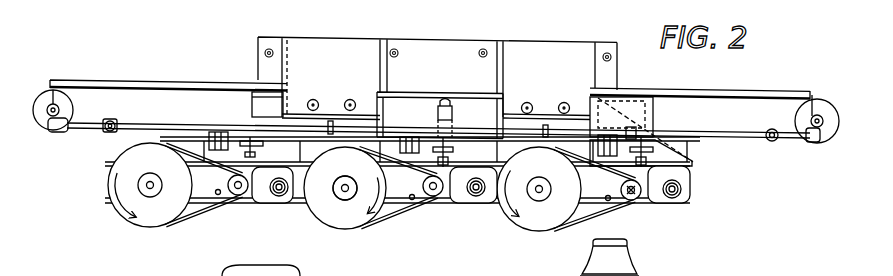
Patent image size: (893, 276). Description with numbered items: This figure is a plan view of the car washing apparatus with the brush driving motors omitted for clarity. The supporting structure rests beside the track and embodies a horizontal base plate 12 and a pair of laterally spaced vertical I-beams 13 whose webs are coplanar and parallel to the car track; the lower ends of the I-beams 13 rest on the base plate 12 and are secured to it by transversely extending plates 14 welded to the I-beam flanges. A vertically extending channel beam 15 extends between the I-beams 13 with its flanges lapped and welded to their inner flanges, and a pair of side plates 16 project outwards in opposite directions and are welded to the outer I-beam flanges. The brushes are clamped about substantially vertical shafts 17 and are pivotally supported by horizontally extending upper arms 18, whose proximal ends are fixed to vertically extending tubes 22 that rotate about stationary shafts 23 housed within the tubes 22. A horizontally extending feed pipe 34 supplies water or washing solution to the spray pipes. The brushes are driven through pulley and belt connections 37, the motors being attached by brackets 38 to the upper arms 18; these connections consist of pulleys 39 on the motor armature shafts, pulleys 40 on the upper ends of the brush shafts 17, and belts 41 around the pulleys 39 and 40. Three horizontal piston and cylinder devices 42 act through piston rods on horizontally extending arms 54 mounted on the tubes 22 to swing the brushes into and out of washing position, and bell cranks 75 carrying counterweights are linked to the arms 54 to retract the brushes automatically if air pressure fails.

The base plate 12 is at (552, 48).
The I-beams 13 is at (328, 110).
The transversely extending plates 14 is at (497, 72).
The channel beam 15 is at (454, 86).
The side plates 16 is at (735, 103).
The shafts 17 is at (338, 194).
The upper arms 18 is at (452, 204).
The tubes 22 is at (263, 202).
The shafts 23 is at (285, 205).
The feed pipe 34 is at (727, 140).
The pulley and belt connections 37 is at (150, 232).
The brackets 38 is at (437, 207).
The pulleys 39 is at (635, 200).
The pulleys 40 is at (517, 220).
The belts 41 is at (573, 212).
The piston and cylinder devices 42 is at (658, 143).
The arms 54 is at (276, 200).
The bell cranks 75 is at (410, 162).